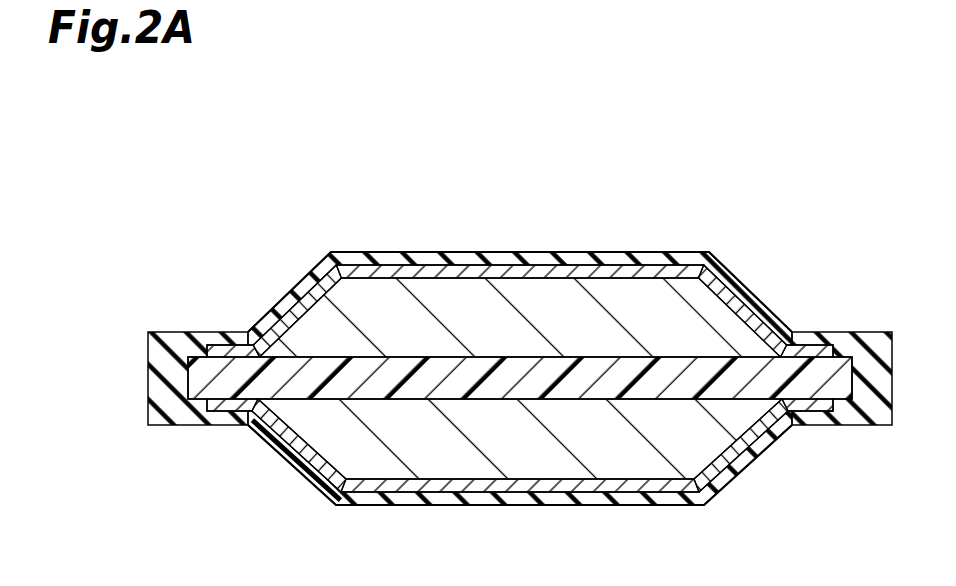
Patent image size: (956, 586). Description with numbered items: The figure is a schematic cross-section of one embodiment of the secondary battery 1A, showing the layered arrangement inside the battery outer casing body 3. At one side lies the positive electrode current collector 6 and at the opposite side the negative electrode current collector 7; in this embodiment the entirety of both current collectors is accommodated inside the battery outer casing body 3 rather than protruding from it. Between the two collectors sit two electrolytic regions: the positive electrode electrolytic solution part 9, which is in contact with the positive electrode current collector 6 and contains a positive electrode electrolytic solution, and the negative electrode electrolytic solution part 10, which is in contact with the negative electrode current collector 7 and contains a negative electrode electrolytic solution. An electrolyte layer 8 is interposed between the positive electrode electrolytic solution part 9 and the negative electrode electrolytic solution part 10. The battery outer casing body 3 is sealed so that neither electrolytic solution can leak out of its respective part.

The sensor element (busbar assembly) 1A is at (550, 300).
The battery outer casing body 3 is at (732, 281).
The positive electrode current collector 6 is at (760, 326).
The negative electrode current collector 7 is at (730, 457).
The electrolyte layer 8 is at (832, 382).
The positive electrode electrolytic solution part 9 is at (322, 327).
The negative electrode electrolytic solution part 10 is at (327, 443).